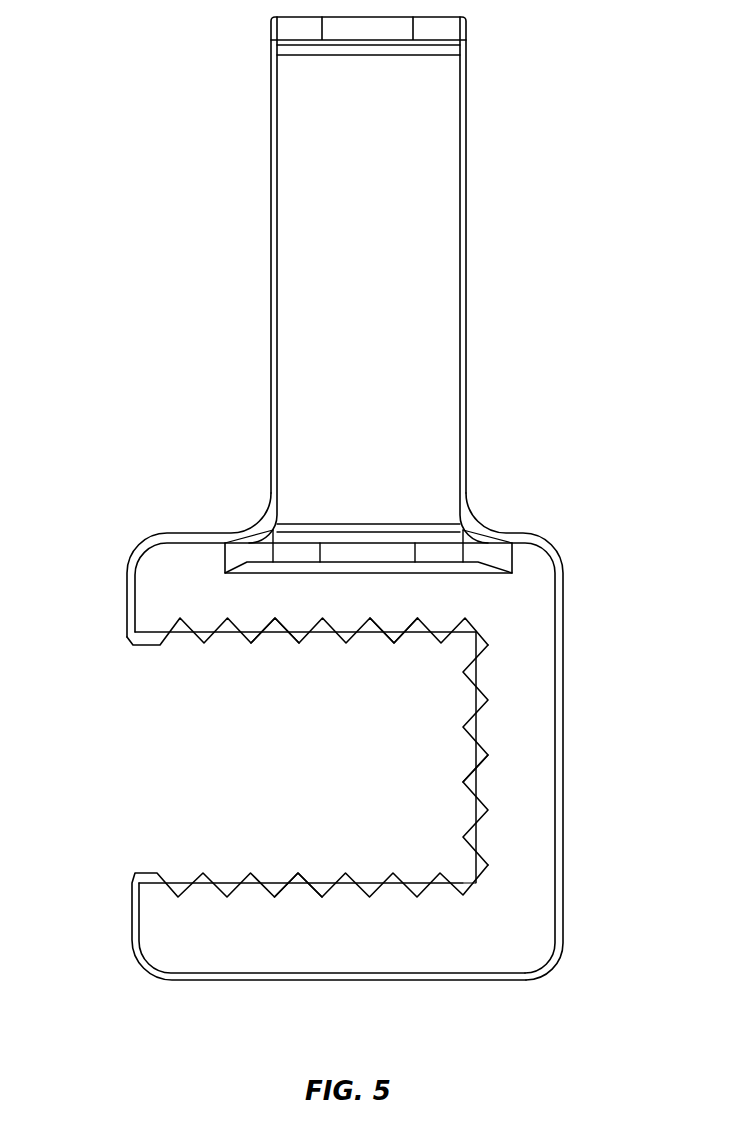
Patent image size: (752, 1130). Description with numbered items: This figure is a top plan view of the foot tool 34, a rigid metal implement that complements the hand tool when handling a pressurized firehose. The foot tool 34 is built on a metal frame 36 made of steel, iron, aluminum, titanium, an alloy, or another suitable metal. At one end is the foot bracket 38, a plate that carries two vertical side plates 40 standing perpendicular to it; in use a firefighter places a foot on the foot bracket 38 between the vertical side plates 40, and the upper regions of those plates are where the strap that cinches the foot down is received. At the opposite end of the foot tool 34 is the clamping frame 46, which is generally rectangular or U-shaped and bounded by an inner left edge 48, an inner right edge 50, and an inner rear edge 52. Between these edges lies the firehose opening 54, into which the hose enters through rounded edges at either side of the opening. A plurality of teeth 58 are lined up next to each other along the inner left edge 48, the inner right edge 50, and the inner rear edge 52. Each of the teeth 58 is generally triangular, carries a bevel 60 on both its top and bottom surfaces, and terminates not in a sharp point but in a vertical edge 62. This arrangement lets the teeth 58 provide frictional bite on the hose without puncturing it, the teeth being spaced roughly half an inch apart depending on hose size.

The foot tool 34 is at (138, 511).
The metal frame 36 is at (535, 565).
The foot bracket 38 is at (445, 300).
The vertical side plates 40 is at (432, 46).
The clamping frame 46 is at (500, 833).
The inner left edge 48 is at (290, 890).
The inner right edge 50 is at (271, 624).
The inner rear edge 52 is at (537, 707).
The firehose opening 54 is at (160, 771).
The teeth 58 is at (262, 632).
The bevel 60 is at (395, 635).
The vertical edge 62 is at (465, 725).